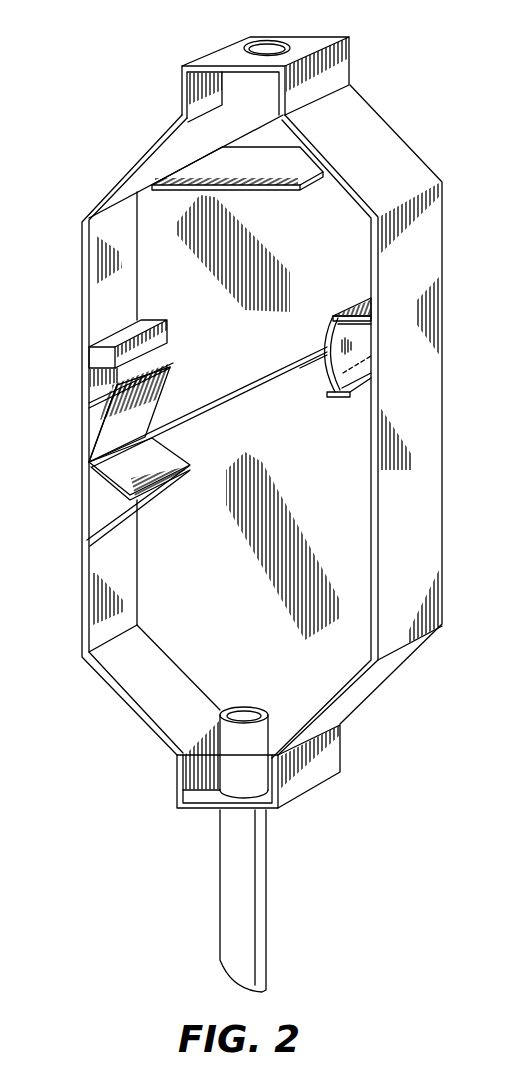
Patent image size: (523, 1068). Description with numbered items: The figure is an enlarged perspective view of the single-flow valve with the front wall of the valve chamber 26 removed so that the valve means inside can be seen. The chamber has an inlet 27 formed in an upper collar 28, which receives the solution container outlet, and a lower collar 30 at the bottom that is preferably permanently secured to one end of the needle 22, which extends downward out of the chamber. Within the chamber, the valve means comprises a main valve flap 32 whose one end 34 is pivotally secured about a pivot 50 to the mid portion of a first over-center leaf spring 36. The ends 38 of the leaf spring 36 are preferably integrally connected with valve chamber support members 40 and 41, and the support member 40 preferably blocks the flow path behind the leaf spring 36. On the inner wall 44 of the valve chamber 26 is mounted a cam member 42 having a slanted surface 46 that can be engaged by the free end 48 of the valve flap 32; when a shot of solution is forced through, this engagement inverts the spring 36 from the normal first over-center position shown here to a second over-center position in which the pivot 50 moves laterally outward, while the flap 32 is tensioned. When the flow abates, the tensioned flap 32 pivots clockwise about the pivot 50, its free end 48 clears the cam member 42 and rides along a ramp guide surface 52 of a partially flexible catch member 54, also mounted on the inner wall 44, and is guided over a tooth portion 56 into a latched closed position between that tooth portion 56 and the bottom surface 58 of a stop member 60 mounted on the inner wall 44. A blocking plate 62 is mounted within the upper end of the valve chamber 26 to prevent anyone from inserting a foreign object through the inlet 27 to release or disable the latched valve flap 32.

The needle 22 is at (255, 918).
The valve chamber 26 is at (442, 470).
The inlet 27 is at (265, 41).
The upper collar 28 is at (340, 75).
The lower collar 30 is at (177, 784).
The main valve flap 32 is at (233, 393).
The end of main valve flap 34 is at (282, 372).
The first over-center leaf spring 36 is at (358, 344).
The ends of leaf spring 38 is at (333, 332).
The support member 40 is at (365, 302).
The support member 41 is at (340, 400).
The cam member 42 is at (104, 503).
The inner wall 44 is at (122, 590).
The slanted surface 46 is at (166, 467).
The free end 48 is at (160, 427).
The pivot 50 is at (322, 368).
The ramp guide surface 52 is at (113, 444).
The catch member 54 is at (102, 410).
The tooth portion 56 is at (163, 388).
The bottom surface 58 is at (92, 388).
The stop member 60 is at (102, 357).
The blocking plate 62 is at (248, 162).